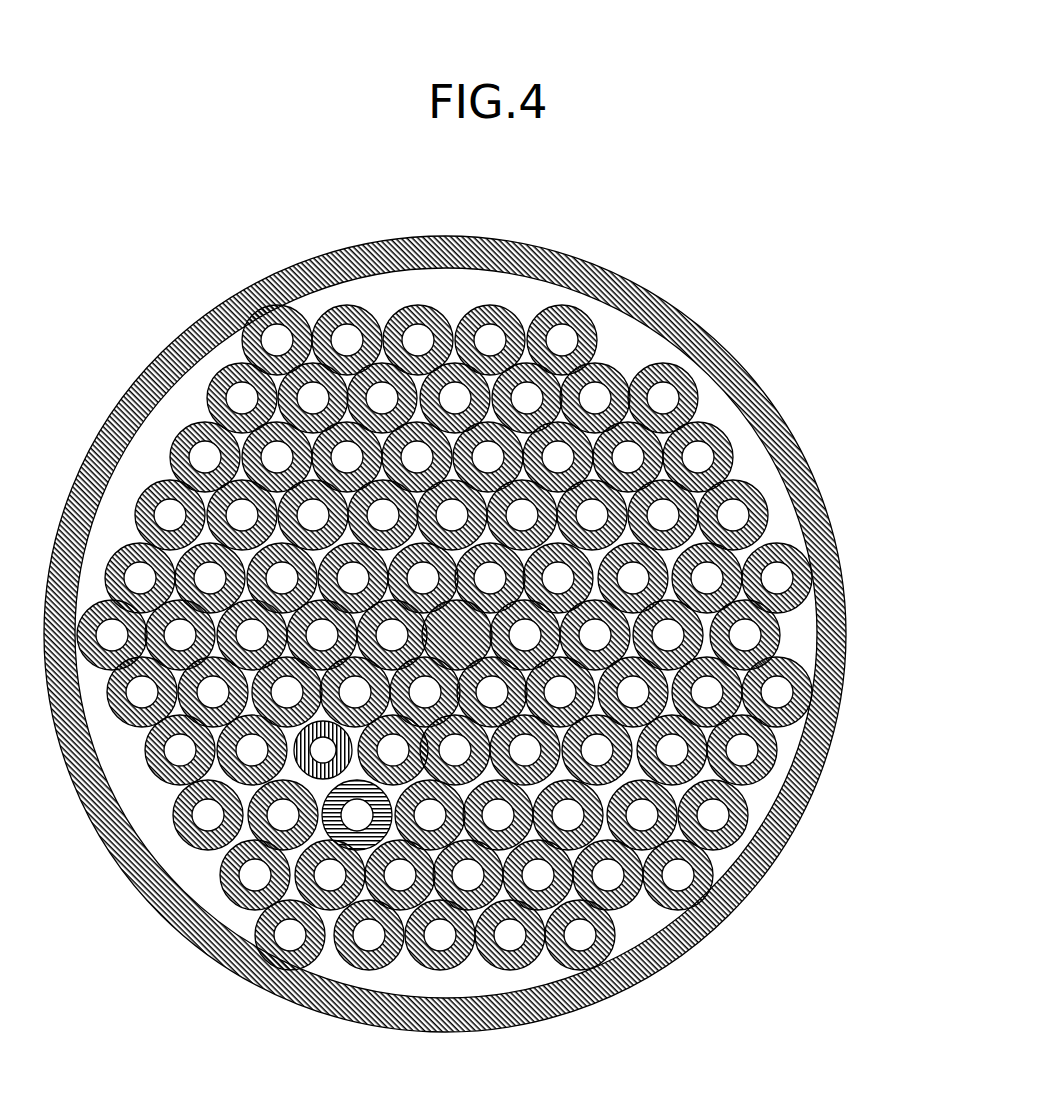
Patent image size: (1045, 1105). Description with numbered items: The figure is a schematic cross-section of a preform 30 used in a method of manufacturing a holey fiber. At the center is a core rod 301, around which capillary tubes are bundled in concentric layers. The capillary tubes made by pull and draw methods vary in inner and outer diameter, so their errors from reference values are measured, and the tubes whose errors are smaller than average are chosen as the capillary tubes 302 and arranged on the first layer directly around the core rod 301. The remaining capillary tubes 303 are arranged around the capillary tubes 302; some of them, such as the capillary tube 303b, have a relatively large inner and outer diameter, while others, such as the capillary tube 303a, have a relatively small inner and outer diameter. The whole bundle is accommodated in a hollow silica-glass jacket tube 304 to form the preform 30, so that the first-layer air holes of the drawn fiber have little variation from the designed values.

The preform 30 is at (701, 269).
The core rod 301 is at (585, 522).
The capillary tube 302 is at (610, 573).
The capillary tube 303 is at (797, 557).
The capillary tube 303a is at (317, 777).
The capillary tube 303b is at (370, 847).
The jacket tube 304 is at (832, 617).